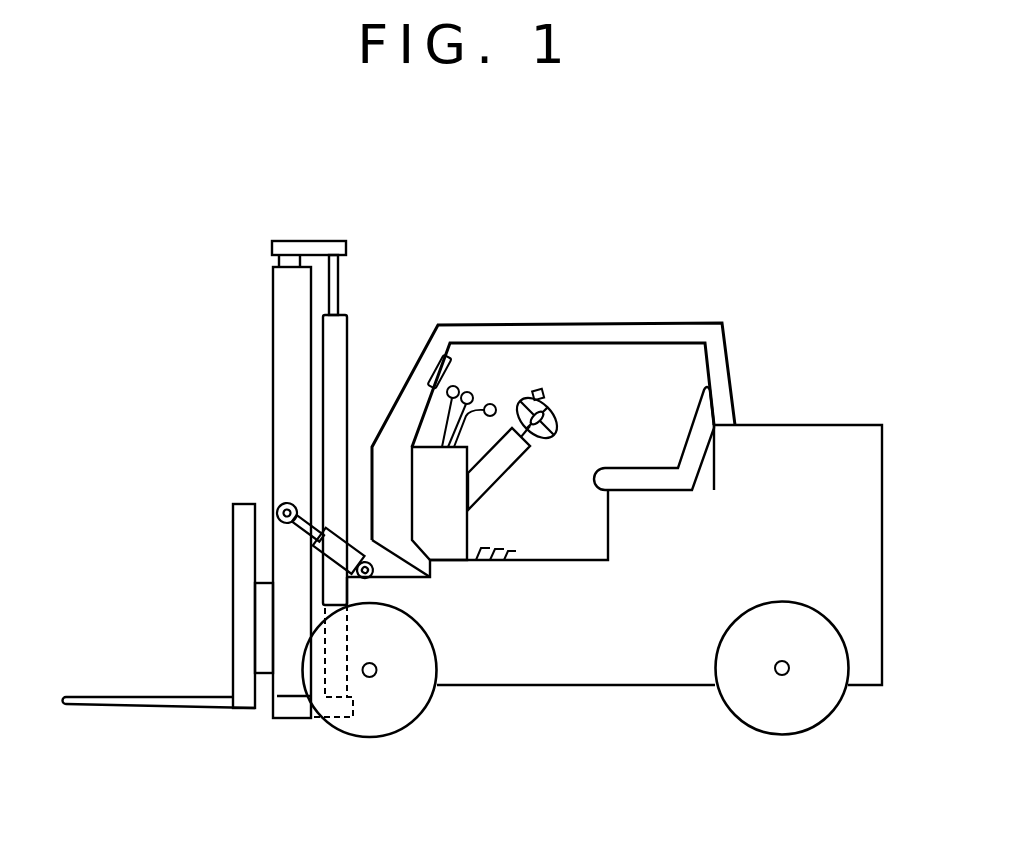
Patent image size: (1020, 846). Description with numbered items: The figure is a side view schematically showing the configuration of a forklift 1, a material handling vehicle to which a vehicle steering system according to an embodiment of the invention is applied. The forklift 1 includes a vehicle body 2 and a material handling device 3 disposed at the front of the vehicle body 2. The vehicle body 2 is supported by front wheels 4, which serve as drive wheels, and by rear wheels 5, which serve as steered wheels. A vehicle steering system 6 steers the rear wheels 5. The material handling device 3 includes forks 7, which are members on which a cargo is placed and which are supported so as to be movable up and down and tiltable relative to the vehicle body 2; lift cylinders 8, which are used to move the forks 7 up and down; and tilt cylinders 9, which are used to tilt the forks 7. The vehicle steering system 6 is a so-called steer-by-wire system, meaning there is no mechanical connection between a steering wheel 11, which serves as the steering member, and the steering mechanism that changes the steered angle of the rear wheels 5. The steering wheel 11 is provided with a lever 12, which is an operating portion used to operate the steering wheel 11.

The forklift 1 is at (744, 350).
The vehicle body 2 is at (581, 686).
The material handling device 3 is at (262, 410).
The front wheels 4 is at (389, 718).
The rear wheels 5 is at (803, 717).
The vehicle steering system 6 is at (531, 470).
The forks 7 is at (150, 697).
The lift cylinders 8 is at (350, 336).
The tilt cylinders 9 is at (358, 541).
The steering wheel 11 is at (560, 433).
The lever 12 is at (548, 403).